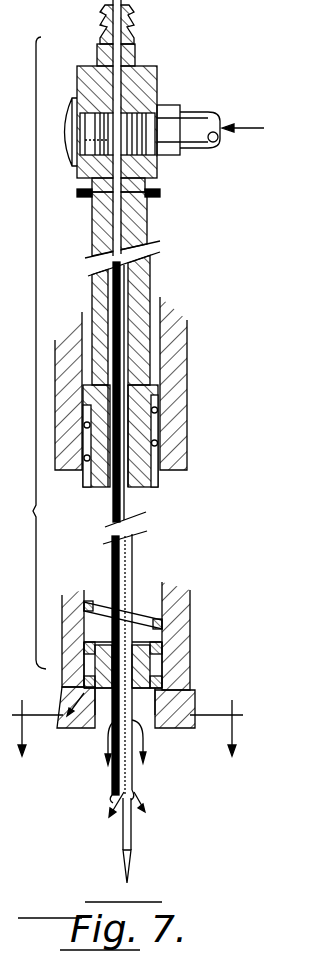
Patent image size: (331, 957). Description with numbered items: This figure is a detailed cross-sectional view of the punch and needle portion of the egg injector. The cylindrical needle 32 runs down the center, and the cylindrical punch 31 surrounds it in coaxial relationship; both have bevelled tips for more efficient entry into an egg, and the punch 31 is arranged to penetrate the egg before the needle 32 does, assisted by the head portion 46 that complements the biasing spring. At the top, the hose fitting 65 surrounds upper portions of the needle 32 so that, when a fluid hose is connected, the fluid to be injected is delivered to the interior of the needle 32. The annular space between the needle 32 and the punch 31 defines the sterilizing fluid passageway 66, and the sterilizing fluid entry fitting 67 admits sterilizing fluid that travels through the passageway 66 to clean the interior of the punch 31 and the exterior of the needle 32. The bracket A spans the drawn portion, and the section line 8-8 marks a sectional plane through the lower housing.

The hose fitting 65 is at (127, 10).
The sterilizing fluid entry fitting 67 is at (163, 111).
The sterilizing fluid passageway 66 is at (128, 498).
The punch 31 is at (135, 557).
The head portion 46 is at (164, 667).
The needle 32 is at (132, 842).
The section line 8- 8 is at (127, 712).
The assembly A is at (23, 353).